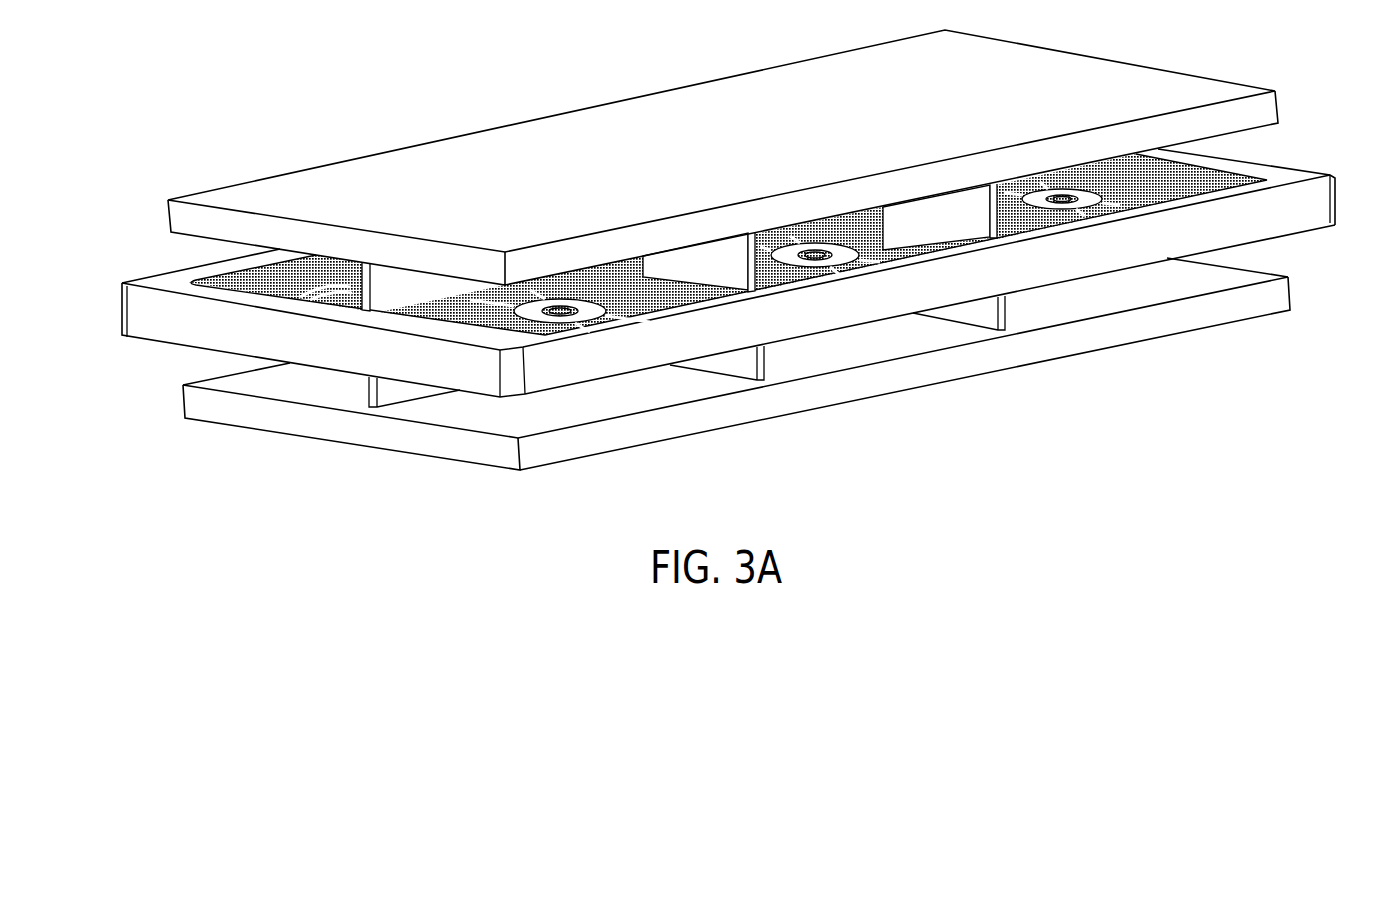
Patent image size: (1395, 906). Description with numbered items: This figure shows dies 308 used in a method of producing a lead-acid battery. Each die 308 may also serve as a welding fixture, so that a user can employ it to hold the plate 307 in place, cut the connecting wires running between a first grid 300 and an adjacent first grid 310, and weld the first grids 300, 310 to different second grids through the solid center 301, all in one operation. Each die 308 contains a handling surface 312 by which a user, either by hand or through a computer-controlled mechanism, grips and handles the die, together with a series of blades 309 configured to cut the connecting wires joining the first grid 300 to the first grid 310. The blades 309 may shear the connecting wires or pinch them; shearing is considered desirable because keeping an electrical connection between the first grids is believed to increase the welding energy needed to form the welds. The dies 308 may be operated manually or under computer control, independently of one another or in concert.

The first grid 300 is at (716, 274).
The solid center 301 is at (597, 303).
The plate 307 is at (716, 273).
The die 308 is at (729, 274).
The blades 309 is at (368, 387).
The first grid 310 is at (438, 316).
The handling surface 312 is at (503, 127).